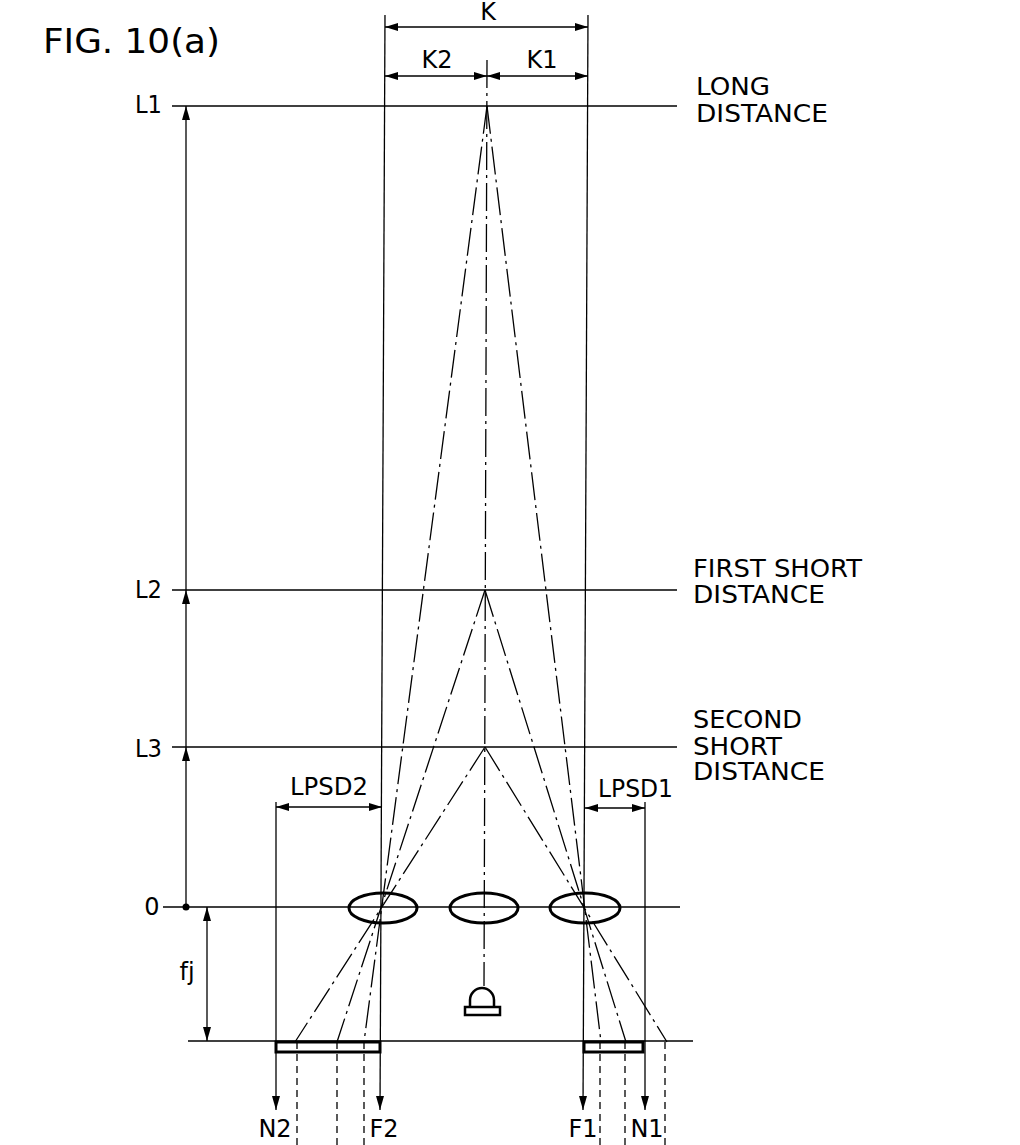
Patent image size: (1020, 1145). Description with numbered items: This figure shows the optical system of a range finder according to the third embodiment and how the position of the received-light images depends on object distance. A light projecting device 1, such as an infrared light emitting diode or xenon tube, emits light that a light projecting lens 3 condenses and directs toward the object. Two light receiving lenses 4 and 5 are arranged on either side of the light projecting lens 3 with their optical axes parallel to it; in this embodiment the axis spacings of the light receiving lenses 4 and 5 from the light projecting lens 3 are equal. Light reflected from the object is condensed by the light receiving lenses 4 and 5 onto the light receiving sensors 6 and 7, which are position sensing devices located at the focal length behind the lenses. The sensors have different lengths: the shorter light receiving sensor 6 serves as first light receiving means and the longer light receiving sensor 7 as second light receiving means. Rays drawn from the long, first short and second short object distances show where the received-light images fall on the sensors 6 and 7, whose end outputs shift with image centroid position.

The light projecting device 1 is at (503, 1010).
The light projecting lens 3 is at (497, 895).
The light receiving lens 4 is at (600, 895).
The light receiving lens 5 is at (368, 893).
The light receiving sensor 6 is at (583, 1050).
The light receiving sensor 7 is at (385, 1050).